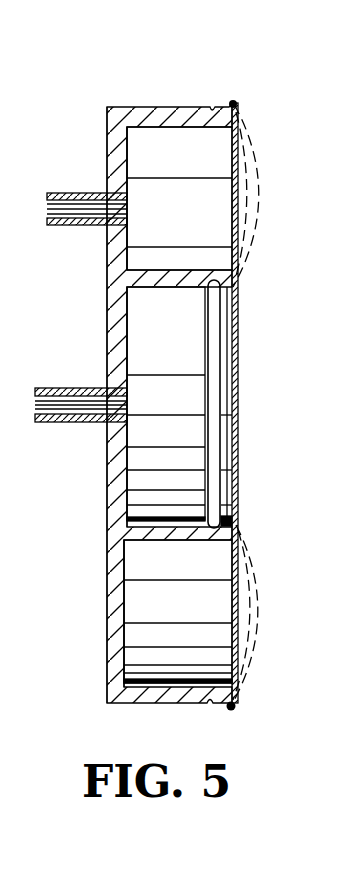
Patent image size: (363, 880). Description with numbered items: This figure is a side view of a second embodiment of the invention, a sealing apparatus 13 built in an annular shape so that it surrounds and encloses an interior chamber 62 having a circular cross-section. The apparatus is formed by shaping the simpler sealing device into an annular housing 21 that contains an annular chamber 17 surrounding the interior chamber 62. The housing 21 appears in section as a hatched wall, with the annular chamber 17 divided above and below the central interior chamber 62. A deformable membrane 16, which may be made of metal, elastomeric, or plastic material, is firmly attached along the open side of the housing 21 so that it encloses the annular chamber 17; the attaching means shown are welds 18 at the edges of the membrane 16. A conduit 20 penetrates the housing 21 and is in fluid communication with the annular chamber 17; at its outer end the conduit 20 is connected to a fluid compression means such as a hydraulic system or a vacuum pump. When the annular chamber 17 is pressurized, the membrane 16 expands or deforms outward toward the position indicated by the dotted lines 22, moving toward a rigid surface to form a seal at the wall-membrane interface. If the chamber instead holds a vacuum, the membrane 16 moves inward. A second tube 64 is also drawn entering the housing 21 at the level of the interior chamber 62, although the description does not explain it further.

The sealing apparatus 13 is at (166, 89).
The annular housing 21 is at (118, 107).
The membrane 16 is at (238, 146).
The dotted lines 22 is at (262, 190).
The annular chamber 17 is at (188, 225).
The interior chamber 62 is at (183, 340).
The welds 18 is at (234, 291).
The conduit 20 is at (76, 190).
The conduit 64 is at (57, 388).